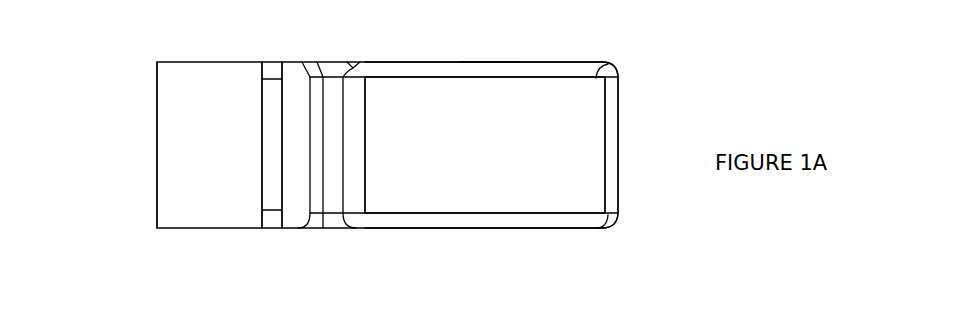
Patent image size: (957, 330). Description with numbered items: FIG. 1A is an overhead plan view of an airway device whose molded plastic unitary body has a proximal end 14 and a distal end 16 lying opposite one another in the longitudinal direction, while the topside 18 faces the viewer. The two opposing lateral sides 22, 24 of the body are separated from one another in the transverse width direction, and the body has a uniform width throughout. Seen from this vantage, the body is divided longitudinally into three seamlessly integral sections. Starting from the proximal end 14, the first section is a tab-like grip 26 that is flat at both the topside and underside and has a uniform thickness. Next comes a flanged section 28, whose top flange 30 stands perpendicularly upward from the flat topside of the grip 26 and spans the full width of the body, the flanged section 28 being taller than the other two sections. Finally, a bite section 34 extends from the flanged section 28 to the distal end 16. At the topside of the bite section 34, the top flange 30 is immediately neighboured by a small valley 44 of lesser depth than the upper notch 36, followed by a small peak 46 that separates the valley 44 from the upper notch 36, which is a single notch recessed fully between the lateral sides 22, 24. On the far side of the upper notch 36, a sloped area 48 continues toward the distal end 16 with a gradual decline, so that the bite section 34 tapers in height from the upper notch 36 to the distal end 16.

The proximal end 14 is at (157, 137).
The distal end 16 is at (617, 138).
The topside 18 is at (568, 96).
The lateral side 22 is at (473, 232).
The lateral side 24 is at (450, 62).
The grip 26 is at (186, 77).
The flanged section 28 is at (273, 53).
The top flange 30 is at (272, 158).
The bite section 34 is at (490, 59).
The upper notch 36 is at (358, 92).
The valley 44 is at (290, 75).
The peak 46 is at (324, 87).
The sloped area 48 is at (502, 92).